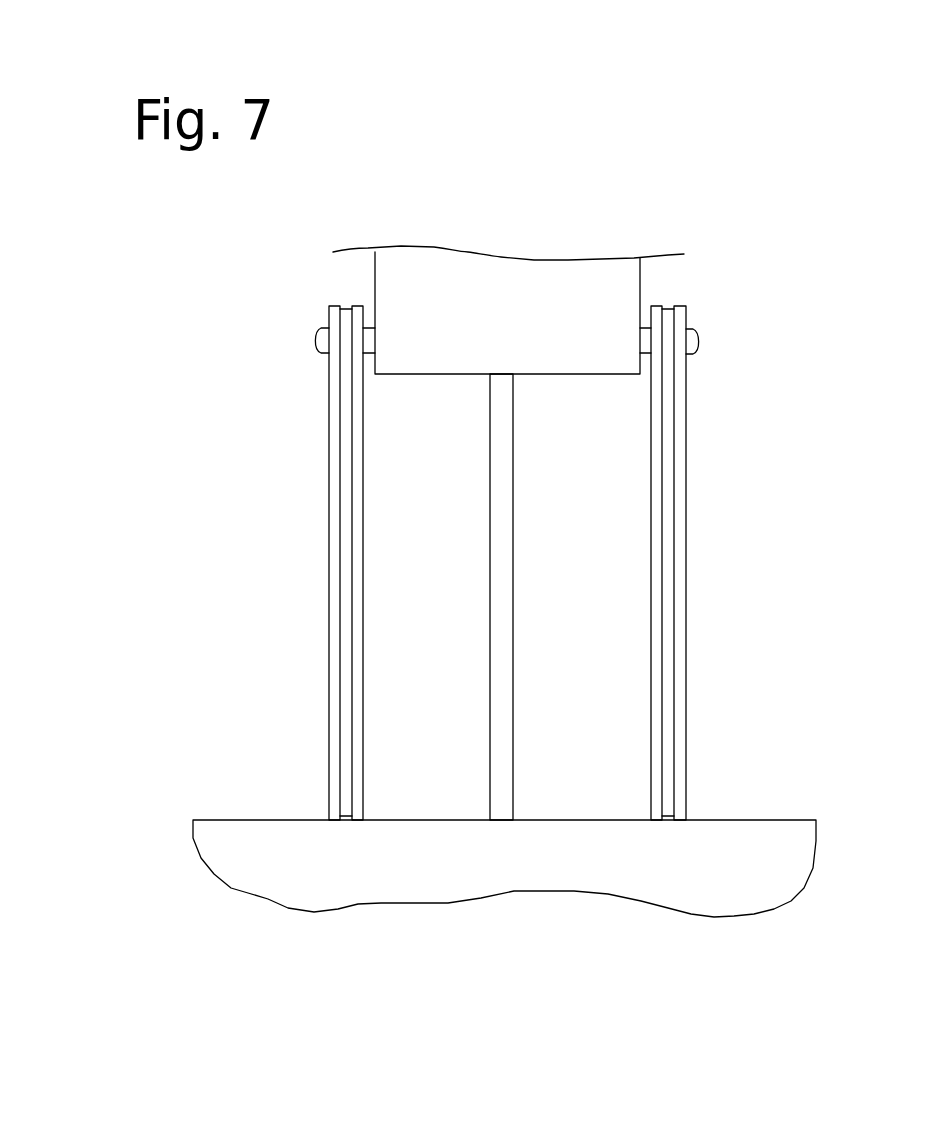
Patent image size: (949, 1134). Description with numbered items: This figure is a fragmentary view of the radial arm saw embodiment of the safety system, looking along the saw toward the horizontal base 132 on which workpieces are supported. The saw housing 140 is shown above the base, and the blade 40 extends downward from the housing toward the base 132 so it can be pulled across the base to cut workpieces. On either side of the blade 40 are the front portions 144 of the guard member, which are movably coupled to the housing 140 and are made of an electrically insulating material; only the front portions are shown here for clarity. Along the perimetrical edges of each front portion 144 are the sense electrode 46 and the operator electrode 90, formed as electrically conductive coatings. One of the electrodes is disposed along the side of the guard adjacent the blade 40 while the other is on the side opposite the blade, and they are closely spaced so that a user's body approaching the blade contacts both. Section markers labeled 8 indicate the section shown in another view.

The saw housing 140 is at (617, 307).
The blade 40 is at (512, 470).
The front portion 144 is at (508, 563).
The sense electrode 46 is at (333, 527).
The operator electrode 90 is at (357, 607).
The section line 8- 8 is at (667, 686).
The base 132 is at (805, 845).